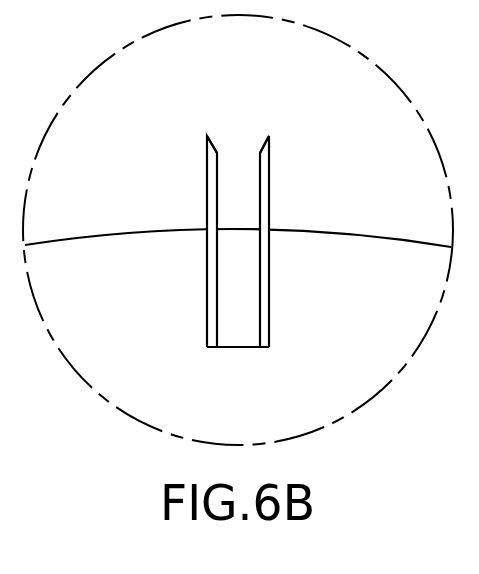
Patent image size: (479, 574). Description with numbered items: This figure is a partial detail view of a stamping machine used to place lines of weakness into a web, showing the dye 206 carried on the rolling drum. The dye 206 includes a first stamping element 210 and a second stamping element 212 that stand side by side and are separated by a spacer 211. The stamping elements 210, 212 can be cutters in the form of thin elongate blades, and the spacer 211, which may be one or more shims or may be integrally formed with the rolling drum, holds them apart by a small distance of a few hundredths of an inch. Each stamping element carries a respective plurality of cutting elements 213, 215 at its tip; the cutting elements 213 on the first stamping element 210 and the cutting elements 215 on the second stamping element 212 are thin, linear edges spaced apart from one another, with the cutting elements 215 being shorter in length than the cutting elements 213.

The dye 206 is at (228, 200).
The first stamping element 210 is at (207, 213).
The spacer 211 is at (235, 307).
The second stamping element 212 is at (270, 212).
The cutting elements 213 is at (207, 136).
The cutting elements 215 is at (269, 137).